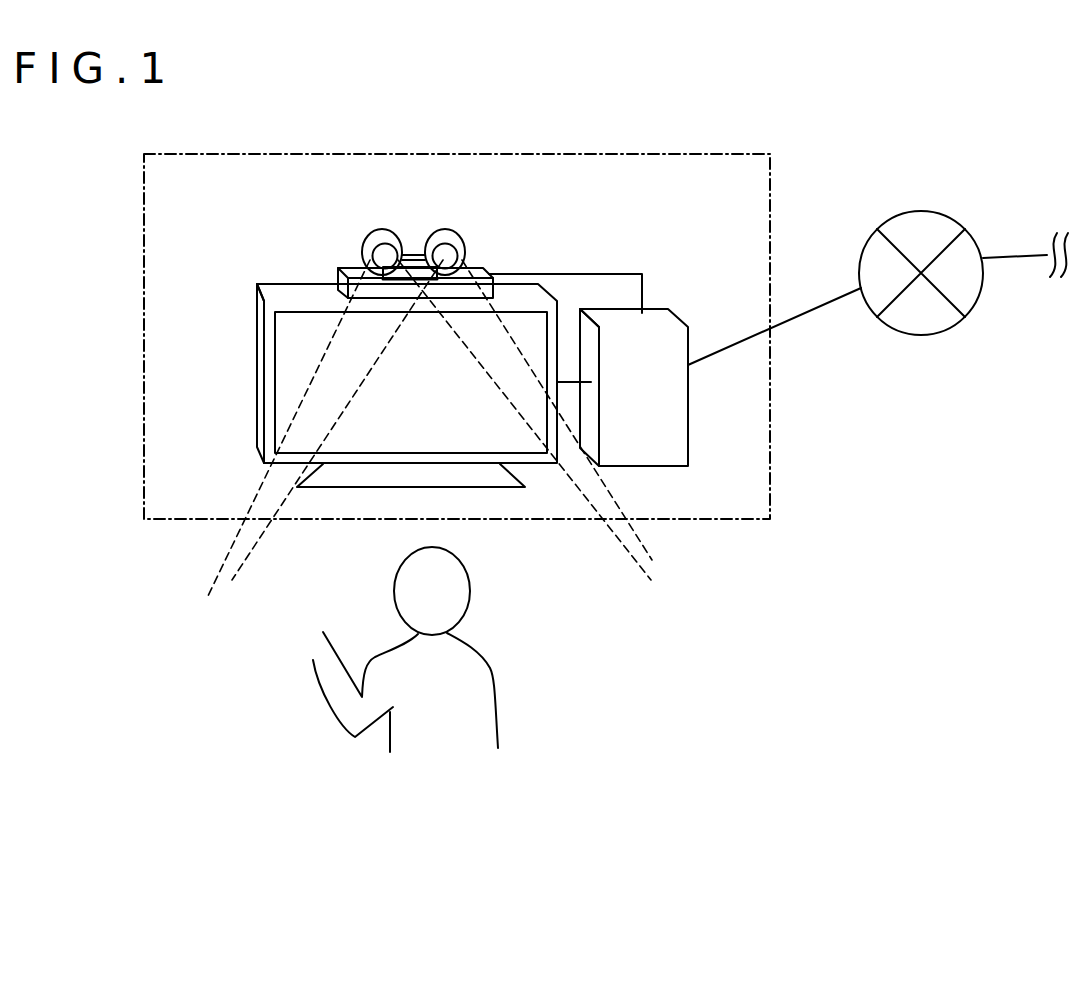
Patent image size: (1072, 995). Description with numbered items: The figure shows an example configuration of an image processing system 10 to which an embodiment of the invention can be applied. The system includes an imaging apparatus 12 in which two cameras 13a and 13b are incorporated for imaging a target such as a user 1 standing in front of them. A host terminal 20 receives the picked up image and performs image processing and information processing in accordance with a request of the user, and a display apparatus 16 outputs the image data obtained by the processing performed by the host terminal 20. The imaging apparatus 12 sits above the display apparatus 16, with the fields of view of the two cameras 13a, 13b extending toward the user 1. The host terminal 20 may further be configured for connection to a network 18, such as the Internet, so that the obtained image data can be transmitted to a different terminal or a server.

The user 1 is at (498, 702).
The image processing system 10 is at (770, 473).
The imaging apparatus 12 is at (429, 383).
The camera 13a is at (465, 252).
The camera 13b is at (362, 250).
The display apparatus 16 is at (256, 365).
The network 18 is at (925, 210).
The host terminal 20 is at (688, 393).